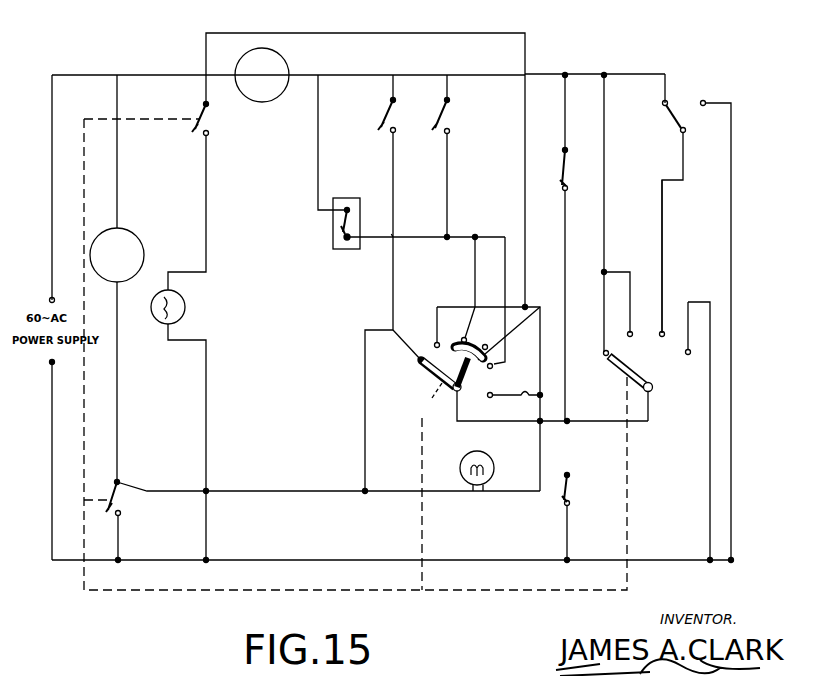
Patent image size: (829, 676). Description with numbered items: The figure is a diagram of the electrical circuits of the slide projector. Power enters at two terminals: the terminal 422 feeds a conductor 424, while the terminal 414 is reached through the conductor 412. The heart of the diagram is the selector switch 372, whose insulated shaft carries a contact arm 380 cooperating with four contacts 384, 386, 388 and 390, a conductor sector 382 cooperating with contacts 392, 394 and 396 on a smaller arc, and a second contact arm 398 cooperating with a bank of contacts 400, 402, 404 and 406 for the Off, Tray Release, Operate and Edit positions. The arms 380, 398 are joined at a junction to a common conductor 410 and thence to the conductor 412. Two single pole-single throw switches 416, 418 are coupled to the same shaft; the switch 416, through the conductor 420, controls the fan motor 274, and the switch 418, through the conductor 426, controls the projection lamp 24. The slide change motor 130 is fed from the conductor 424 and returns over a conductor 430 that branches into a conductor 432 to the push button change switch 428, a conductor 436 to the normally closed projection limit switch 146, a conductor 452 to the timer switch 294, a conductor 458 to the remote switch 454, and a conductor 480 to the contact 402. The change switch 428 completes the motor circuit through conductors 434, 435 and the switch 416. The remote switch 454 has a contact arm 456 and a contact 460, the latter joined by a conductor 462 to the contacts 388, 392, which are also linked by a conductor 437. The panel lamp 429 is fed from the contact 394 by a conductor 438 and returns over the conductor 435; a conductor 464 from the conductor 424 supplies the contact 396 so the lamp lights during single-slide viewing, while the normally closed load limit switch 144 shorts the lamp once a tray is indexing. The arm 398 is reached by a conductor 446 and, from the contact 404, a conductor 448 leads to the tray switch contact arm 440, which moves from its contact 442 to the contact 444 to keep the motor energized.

The lamp 24 is at (164, 322).
The motor 130 is at (262, 102).
The load limit switch 144 is at (575, 475).
The projection limit switch 146 is at (564, 152).
The fan motor 274 is at (120, 228).
The timer switch 294 is at (440, 132).
The selector switch 372 is at (438, 395).
The contact arm 380 is at (436, 372).
The conductor sector 382 is at (539, 306).
The contact 384 is at (418, 361).
The contact 386 is at (435, 343).
The contact 388 is at (463, 337).
The contact 390 is at (486, 344).
The contact 392 is at (488, 369).
The contact 394 is at (491, 397).
The contact 396 is at (465, 423).
The contact arm 398 is at (624, 366).
The contact 400 is at (602, 354).
The contact 402 is at (629, 337).
The contact 404 is at (662, 337).
The contact 406 is at (689, 356).
The common conductor 410 is at (567, 531).
The conductor 412 is at (380, 560).
The terminal 414 is at (52, 364).
The single pole-single throw switch 416 is at (118, 498).
The single pole-single throw switch 418 is at (204, 114).
The conductor 420 is at (117, 152).
The terminal 422 is at (52, 297).
The conductor 424 is at (168, 75).
The conductor 426 is at (206, 86).
The change switch 428 is at (388, 131).
The panel lamp 429 is at (494, 477).
The conductor 430 is at (318, 74).
The conductor 432 is at (393, 88).
The conductor 434 is at (365, 382).
The conductor 435 is at (258, 491).
The conductor 436 is at (565, 112).
The conductor 437 is at (510, 248).
The conductor 438 is at (540, 432).
The contact arm 440 is at (676, 115).
The contact 442 is at (668, 82).
The contact 444 is at (708, 100).
The conductor 446 is at (648, 416).
The conductor 448 is at (662, 198).
The conductor 452 is at (447, 85).
The remote switch 454 is at (360, 192).
The contact arm 456 is at (333, 232).
The conductor 458 is at (318, 160).
The contact 460 is at (333, 246).
The conductor 462 is at (206, 380).
The conductor 464 is at (400, 33).
The conductor 480 is at (604, 140).